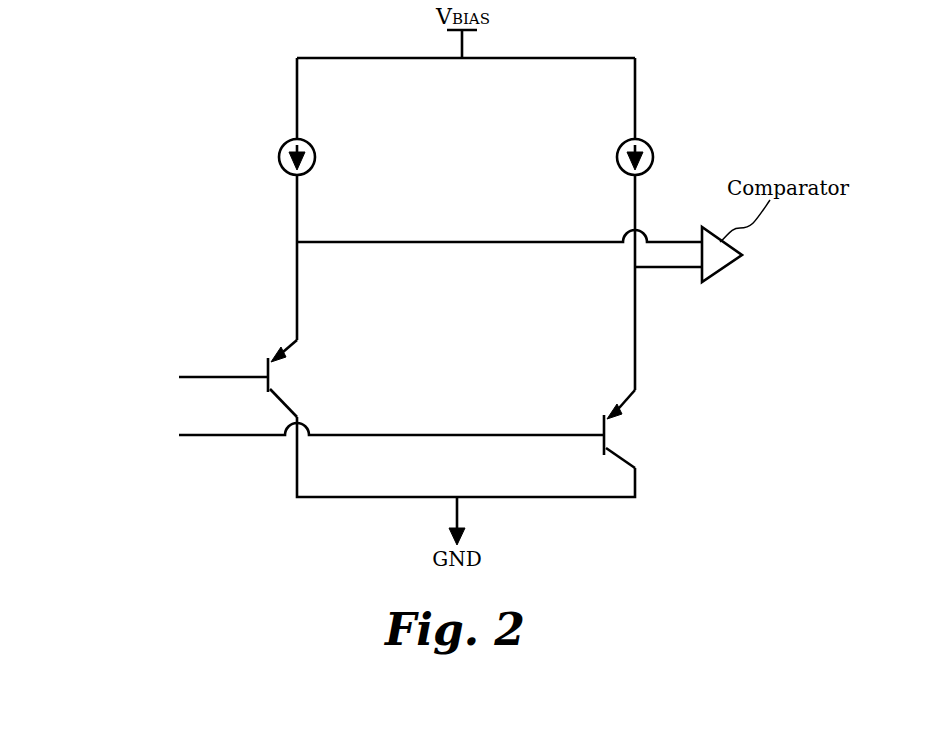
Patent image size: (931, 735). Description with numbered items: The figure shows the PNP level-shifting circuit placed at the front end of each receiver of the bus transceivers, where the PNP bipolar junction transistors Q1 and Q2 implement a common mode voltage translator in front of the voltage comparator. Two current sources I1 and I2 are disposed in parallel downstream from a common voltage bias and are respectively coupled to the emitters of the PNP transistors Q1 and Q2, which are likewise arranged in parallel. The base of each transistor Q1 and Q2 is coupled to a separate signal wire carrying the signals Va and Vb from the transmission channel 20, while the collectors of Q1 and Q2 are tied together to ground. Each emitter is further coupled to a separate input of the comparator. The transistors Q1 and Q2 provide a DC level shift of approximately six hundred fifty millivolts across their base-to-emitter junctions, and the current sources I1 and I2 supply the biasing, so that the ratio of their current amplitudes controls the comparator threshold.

The first current source I1 is at (282, 157).
The second current source I2 is at (648, 157).
The first PNP bipolar junction transistor Q1 is at (296, 378).
The second PNP bipolar junction transistor Q2 is at (633, 429).
The transmission channel 20 is at (172, 427).